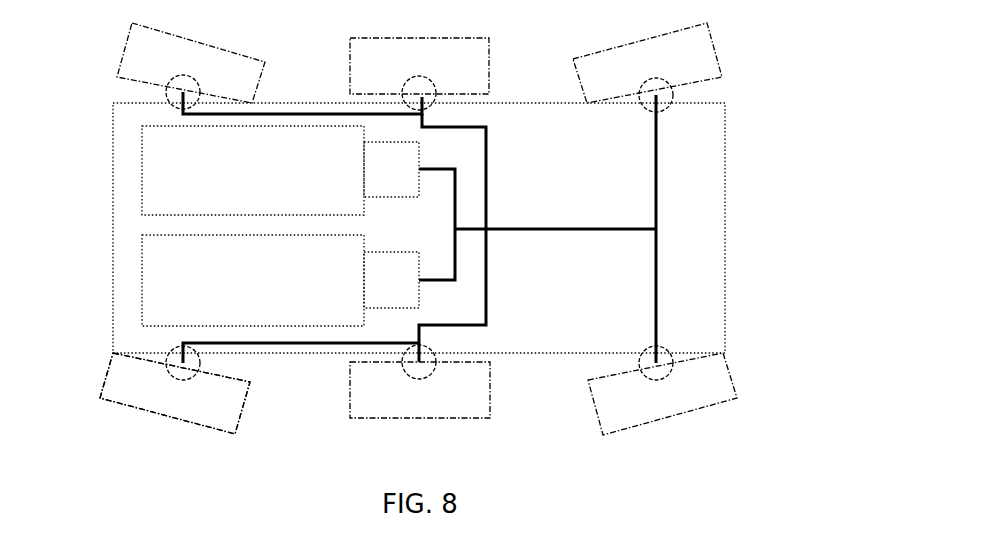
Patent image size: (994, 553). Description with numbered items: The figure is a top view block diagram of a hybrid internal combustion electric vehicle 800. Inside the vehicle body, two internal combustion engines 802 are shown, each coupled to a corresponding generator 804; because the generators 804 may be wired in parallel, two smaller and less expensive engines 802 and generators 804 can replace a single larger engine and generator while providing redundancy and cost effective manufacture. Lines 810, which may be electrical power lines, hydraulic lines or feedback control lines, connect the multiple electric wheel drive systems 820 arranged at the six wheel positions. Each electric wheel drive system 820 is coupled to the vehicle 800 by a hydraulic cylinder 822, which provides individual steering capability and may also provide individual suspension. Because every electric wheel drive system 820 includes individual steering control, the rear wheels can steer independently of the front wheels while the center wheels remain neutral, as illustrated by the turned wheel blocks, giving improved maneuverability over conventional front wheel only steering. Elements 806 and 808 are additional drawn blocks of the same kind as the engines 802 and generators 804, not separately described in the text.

The hybrid internal combustion electric vehicle 800 is at (655, 458).
The internal combustion engine 802 is at (218, 162).
The generator 804 is at (392, 162).
The battery pack 806 is at (183, 282).
The power electronics unit 808 is at (392, 288).
The lines 810 is at (600, 229).
The electric wheel drive system 820 is at (153, 390).
The hydraulic cylinder 822 is at (170, 358).